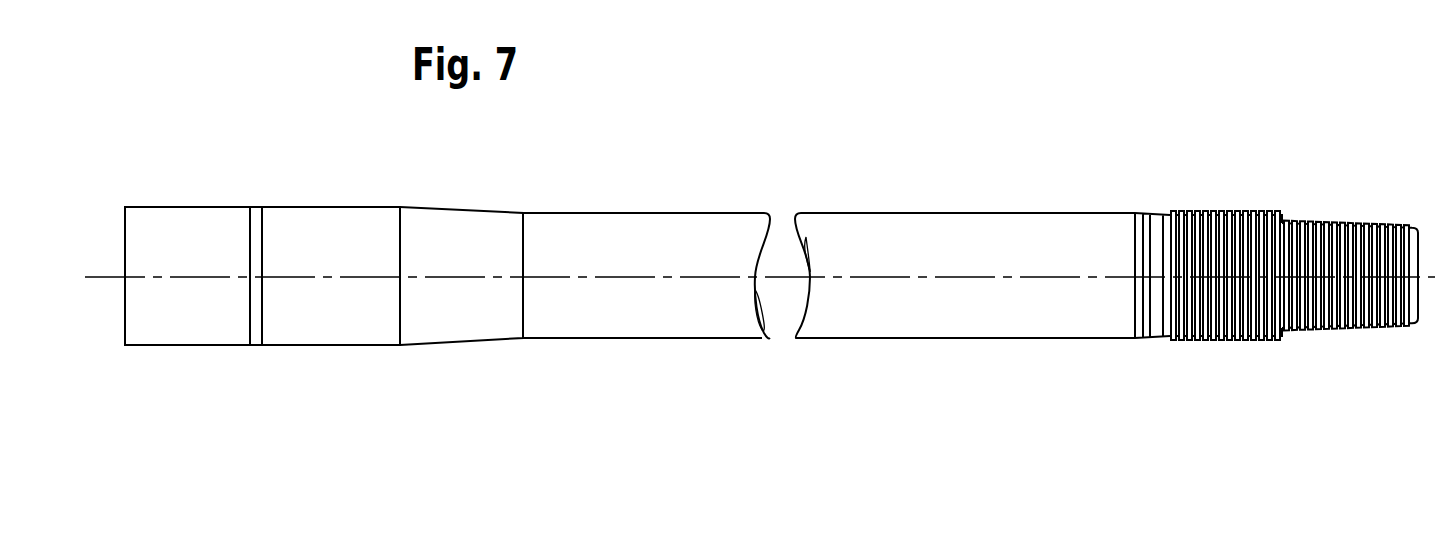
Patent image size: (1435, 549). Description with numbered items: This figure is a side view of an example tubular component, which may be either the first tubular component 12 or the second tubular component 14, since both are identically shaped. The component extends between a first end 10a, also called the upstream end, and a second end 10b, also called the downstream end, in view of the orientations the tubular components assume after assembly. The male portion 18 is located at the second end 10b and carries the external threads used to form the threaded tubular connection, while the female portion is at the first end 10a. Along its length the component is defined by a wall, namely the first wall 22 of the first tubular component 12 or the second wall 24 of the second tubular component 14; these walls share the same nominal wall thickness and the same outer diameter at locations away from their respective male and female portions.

The first end 10a is at (198, 192).
The second end 10b is at (1277, 234).
The first tubular component 12 is at (646, 242).
The second tubular component 14 is at (723, 174).
The male portion 18 is at (1367, 225).
The first wall 22 is at (965, 241).
The second wall 24 is at (887, 212).